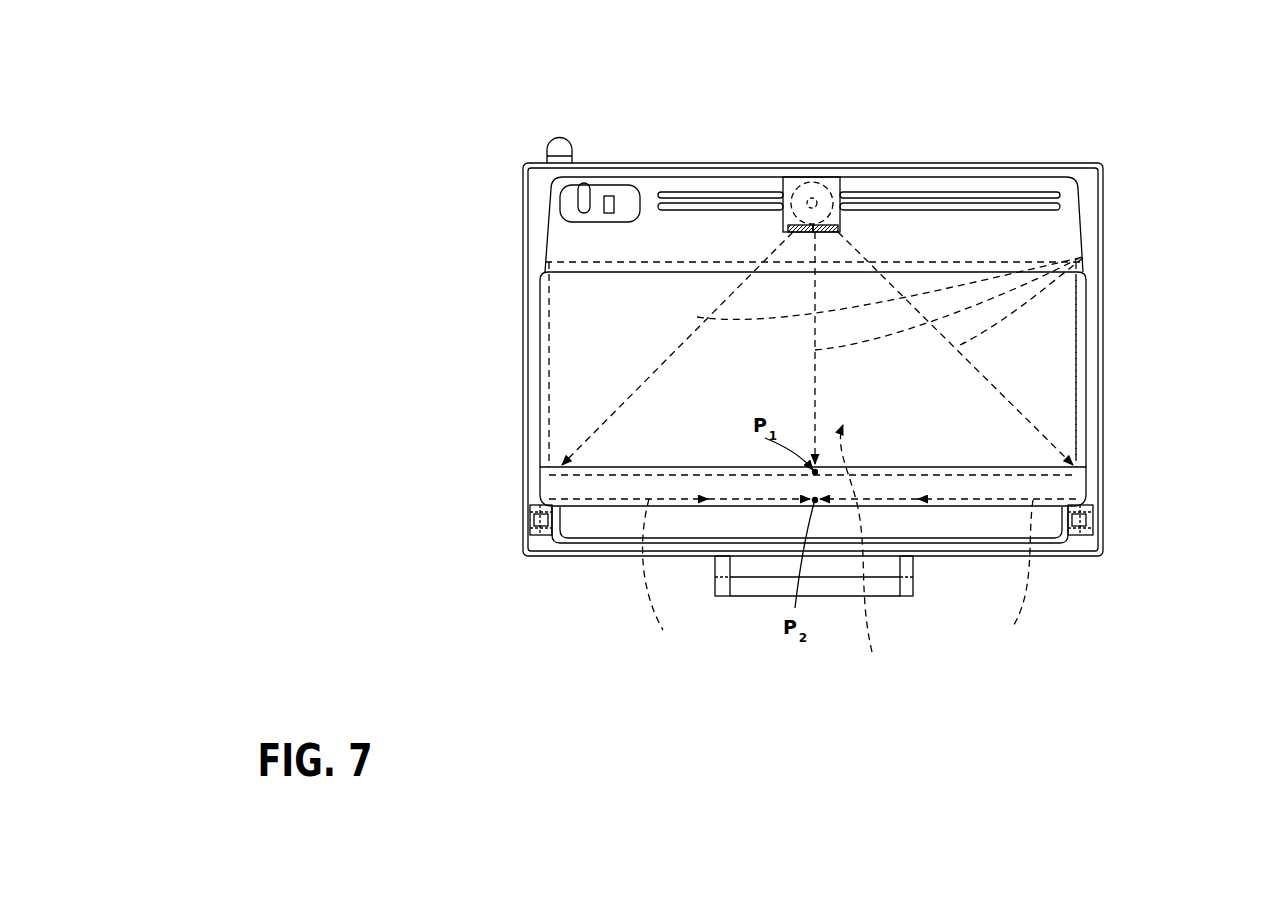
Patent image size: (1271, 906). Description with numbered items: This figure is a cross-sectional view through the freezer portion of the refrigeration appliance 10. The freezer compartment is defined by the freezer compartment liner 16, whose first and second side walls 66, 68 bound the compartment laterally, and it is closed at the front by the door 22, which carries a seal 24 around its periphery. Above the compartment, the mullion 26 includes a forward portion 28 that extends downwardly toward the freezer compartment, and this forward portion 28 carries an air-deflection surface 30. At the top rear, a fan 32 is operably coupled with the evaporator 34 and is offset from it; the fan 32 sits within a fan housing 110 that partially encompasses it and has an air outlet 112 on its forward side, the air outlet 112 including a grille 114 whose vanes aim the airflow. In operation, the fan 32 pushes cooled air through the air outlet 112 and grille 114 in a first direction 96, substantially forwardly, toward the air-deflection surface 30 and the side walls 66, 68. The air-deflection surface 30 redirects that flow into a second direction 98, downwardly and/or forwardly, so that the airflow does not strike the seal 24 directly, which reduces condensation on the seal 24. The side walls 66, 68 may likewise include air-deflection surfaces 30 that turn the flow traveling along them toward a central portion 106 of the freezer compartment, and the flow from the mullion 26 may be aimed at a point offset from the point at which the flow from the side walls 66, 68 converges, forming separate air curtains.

The refrigeration appliance 10 is at (1143, 142).
The freezer compartment liner 16 is at (596, 313).
The door 22 is at (573, 558).
The seal 24 is at (533, 525).
The mullion 26 is at (540, 365).
The forward portion 28 is at (533, 504).
The air-deflection surface 30 is at (533, 513).
The fan 32 is at (790, 173).
The evaporator 34 is at (722, 190).
The first side wall 66 is at (545, 470).
The second side wall 68 is at (1063, 405).
The first direction 96 is at (1083, 258).
The second direction 98 is at (838, 553).
The central portion 106 is at (790, 528).
The fan housing 110 is at (832, 177).
The air outlet 112 is at (836, 236).
The grille 114 is at (790, 234).